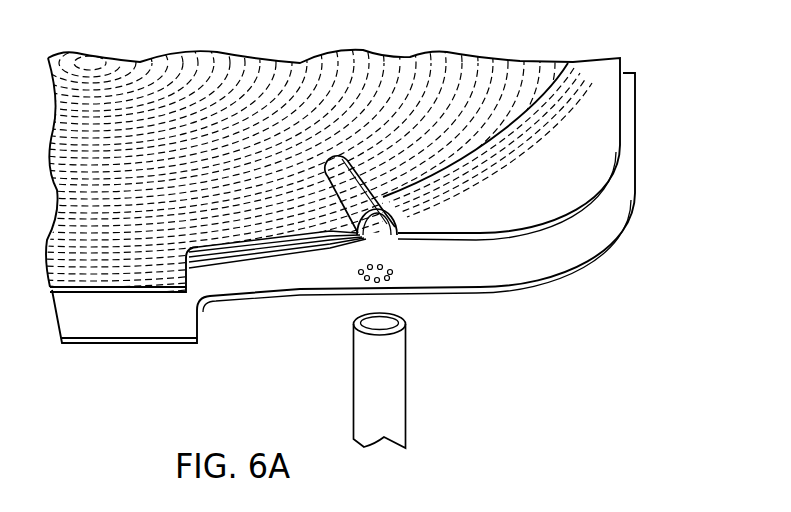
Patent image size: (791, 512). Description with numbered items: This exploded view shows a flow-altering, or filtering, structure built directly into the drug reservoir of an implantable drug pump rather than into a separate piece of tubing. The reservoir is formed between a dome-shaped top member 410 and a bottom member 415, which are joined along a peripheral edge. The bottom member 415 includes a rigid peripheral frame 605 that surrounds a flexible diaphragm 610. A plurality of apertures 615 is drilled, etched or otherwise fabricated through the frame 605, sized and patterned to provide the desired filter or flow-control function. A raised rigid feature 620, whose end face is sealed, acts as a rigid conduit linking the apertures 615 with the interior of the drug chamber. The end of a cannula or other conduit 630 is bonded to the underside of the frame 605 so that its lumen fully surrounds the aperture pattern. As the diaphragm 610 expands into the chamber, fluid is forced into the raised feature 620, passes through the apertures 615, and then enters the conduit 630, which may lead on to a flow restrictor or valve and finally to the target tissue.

The top member 410 is at (588, 67).
The bottom member 415 is at (635, 99).
The rigid peripheral frame 605 is at (625, 165).
The flexible diaphragm 610 is at (260, 255).
The apertures 615 is at (360, 270).
The raised rigid feature 620 is at (395, 236).
The conduit 630 is at (398, 370).